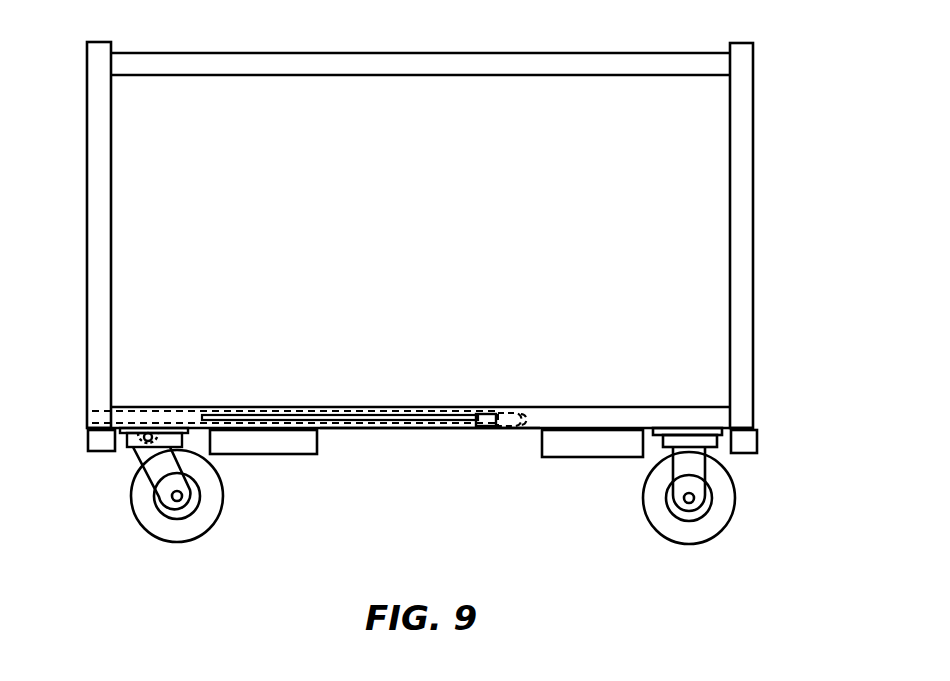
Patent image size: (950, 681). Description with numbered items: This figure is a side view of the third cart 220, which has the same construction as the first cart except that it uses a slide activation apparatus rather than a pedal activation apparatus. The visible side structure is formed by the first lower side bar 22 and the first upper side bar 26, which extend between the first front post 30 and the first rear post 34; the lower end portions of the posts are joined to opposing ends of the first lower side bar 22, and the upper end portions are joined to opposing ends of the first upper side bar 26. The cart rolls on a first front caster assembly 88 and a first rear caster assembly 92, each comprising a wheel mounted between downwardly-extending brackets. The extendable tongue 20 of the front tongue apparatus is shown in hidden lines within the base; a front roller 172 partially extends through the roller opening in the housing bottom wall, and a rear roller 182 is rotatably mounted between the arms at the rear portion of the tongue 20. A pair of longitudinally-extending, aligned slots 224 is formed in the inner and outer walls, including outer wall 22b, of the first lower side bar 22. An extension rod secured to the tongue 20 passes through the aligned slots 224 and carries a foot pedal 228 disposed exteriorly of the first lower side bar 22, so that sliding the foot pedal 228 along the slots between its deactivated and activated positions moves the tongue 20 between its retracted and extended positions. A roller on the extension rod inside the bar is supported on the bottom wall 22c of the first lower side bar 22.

The third cart 220 is at (433, 302).
The first upper side bar 26 is at (398, 64).
The first front post 30 is at (97, 270).
The first rear post 34 is at (740, 217).
The first lower side bar 22 is at (677, 408).
The outer wall 22b is at (578, 426).
The bottom wall 22c is at (490, 432).
The tongue 20 is at (163, 418).
The aligned slots 224 is at (379, 420).
The foot pedal 228 is at (484, 412).
The rear roller 182 is at (526, 418).
The front roller 172 is at (132, 452).
The first front caster assembly 88 is at (136, 537).
The first rear caster assembly 92 is at (725, 542).